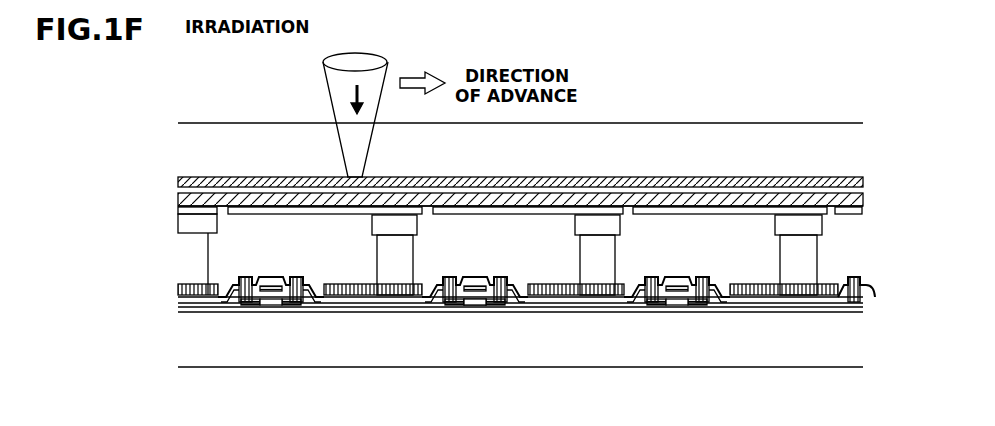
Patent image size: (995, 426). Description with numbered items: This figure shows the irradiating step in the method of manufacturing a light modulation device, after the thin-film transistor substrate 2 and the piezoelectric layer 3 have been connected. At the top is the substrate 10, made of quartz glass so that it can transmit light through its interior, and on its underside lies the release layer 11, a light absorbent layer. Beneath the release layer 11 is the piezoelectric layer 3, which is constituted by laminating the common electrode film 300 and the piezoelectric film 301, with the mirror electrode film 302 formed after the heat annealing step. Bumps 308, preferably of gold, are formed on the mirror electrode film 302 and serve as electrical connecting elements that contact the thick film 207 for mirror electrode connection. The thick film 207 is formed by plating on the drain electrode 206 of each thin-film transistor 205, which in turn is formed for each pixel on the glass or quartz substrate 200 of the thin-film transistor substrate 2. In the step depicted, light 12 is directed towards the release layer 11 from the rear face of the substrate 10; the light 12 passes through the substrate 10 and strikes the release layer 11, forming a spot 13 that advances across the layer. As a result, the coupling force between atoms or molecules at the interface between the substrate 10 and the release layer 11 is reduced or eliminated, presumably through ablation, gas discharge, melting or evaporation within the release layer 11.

The thin-film transistor substrate 2 is at (539, 343).
The piezoelectric layer 3 is at (536, 177).
The substrate 10 is at (661, 123).
The release layer 11 is at (651, 177).
The light 12 is at (326, 70).
The spot 13 is at (357, 177).
The glass or quartz substrate 200 is at (598, 355).
The thin-film transistor 205 is at (473, 305).
The drain electrode 206 is at (598, 292).
The thick film 207 is at (611, 254).
The common electrode film 300 is at (549, 177).
The piezoelectric film 301 is at (517, 206).
The mirror electrode film 302 is at (452, 208).
The bumps 308 is at (617, 222).